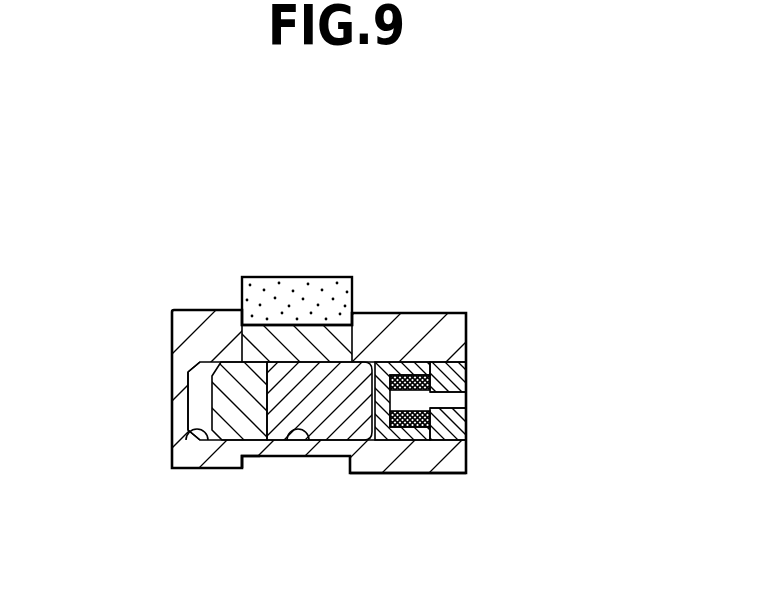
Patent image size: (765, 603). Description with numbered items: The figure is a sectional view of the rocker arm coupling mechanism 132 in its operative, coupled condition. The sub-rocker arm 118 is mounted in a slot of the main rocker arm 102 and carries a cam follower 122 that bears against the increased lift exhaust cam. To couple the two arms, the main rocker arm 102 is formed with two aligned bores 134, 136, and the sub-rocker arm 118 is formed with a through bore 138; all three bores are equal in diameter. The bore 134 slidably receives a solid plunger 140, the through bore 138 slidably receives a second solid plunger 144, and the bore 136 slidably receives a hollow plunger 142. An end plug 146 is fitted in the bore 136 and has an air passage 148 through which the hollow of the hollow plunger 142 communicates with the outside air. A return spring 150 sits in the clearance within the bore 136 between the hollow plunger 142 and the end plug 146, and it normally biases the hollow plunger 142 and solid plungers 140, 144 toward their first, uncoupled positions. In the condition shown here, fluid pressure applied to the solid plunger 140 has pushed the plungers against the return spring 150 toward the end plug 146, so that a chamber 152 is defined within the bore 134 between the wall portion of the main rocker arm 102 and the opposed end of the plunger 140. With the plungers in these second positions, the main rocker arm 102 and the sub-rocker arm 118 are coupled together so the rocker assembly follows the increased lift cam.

The rocker arm coupling mechanism 132 is at (236, 250).
The main rocker arm 102 is at (189, 308).
The cam follower 122 is at (302, 277).
The chamber 152 is at (195, 387).
The solid plunger 140 is at (220, 403).
The solid plunger 144 is at (318, 410).
The hollow plunger 142 is at (395, 363).
The return spring 150 is at (425, 363).
The end plug 146 is at (463, 428).
The air passage 148 is at (463, 394).
The bore 134 is at (192, 444).
The through bore 138 is at (285, 440).
The sub-rocker arm 118 is at (253, 458).
The bore 136 is at (405, 473).